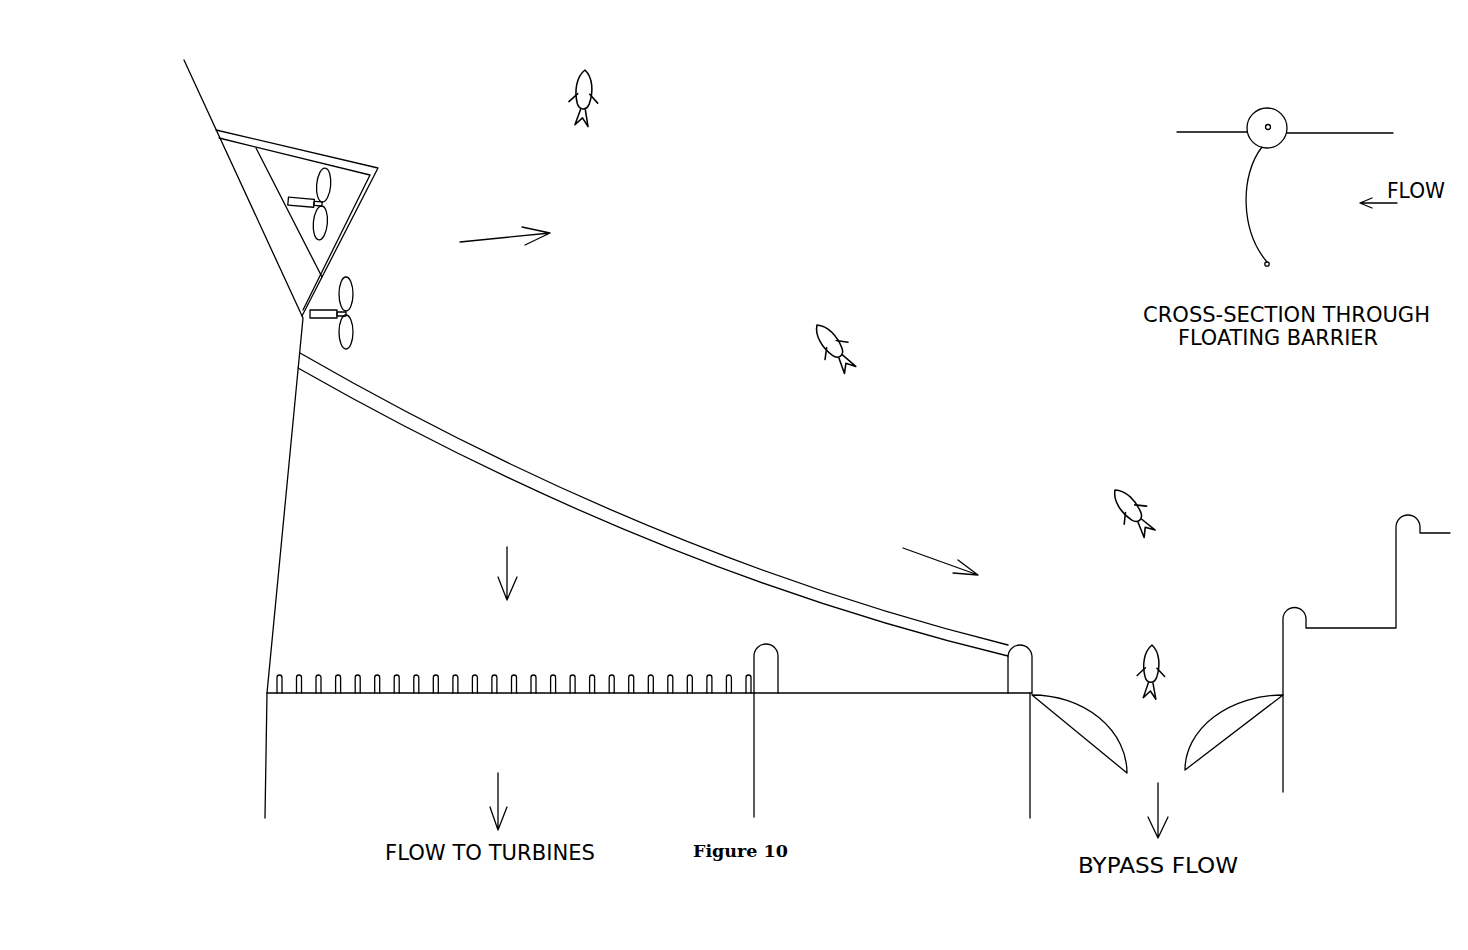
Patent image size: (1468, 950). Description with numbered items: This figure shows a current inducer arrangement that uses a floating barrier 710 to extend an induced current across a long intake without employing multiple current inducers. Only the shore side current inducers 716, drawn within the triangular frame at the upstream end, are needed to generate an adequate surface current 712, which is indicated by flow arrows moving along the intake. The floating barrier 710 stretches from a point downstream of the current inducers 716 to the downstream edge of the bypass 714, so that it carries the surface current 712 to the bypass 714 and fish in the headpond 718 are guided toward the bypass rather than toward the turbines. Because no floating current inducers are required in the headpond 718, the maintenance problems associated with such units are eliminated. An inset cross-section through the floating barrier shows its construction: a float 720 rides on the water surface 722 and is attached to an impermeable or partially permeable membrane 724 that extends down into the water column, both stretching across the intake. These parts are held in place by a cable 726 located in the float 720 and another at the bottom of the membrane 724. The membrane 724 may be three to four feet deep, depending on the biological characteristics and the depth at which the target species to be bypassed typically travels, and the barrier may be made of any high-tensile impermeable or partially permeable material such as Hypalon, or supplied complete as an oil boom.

The floating barrier 710 is at (468, 453).
The surface current 712 is at (508, 245).
The bypass 714 is at (1153, 757).
The shore side current inducers 716 is at (345, 212).
The headpond 718 is at (867, 384).
The float 720 is at (1272, 107).
The water surface 722 is at (1357, 132).
The membrane 724 is at (1248, 195).
The cable 726 is at (1262, 130).